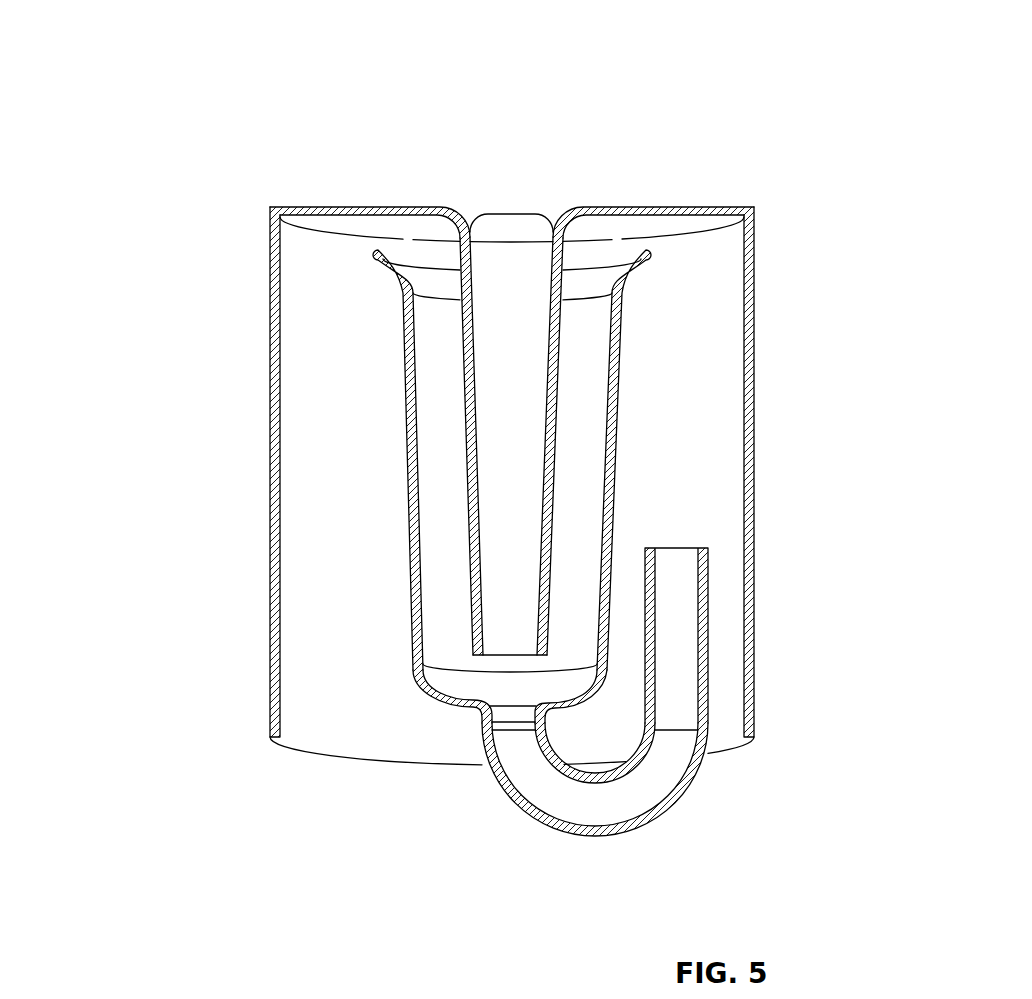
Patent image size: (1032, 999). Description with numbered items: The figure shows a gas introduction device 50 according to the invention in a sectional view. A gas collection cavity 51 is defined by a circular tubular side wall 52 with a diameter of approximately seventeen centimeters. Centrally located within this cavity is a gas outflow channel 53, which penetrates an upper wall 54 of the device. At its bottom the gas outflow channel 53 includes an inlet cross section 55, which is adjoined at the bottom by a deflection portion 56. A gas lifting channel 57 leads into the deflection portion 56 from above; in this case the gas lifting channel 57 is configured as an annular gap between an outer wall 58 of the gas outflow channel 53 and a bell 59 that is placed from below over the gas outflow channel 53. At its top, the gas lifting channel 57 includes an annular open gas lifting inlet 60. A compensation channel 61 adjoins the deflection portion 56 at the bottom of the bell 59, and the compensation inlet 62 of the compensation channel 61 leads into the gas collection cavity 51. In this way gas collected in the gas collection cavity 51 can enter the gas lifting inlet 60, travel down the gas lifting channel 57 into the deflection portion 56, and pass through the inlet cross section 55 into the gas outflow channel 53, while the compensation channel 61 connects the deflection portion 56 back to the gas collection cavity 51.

The gas introduction device 50 is at (473, 469).
The gas collection cavity 51 is at (703, 308).
The circular tubular side wall 52 is at (753, 368).
The gas outflow channel 53 is at (510, 393).
The upper wall 54 is at (713, 207).
The inlet cross section 55 is at (512, 657).
The deflection portion 56 is at (468, 682).
The gas lifting channel 57 is at (443, 548).
The outer wall of the gas outflow channel 58 is at (445, 455).
The bell 59 is at (617, 458).
The gas lifting inlet 60 is at (600, 258).
The compensation channel 61 is at (627, 793).
The compensation inlet 62 is at (680, 548).